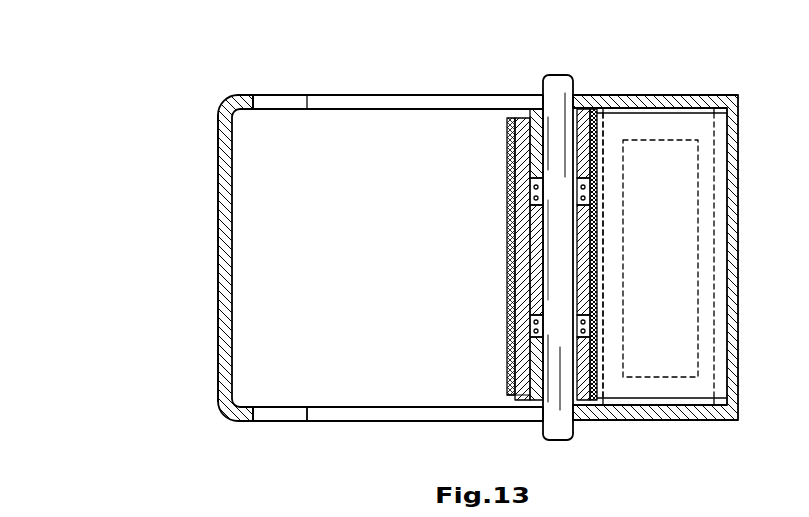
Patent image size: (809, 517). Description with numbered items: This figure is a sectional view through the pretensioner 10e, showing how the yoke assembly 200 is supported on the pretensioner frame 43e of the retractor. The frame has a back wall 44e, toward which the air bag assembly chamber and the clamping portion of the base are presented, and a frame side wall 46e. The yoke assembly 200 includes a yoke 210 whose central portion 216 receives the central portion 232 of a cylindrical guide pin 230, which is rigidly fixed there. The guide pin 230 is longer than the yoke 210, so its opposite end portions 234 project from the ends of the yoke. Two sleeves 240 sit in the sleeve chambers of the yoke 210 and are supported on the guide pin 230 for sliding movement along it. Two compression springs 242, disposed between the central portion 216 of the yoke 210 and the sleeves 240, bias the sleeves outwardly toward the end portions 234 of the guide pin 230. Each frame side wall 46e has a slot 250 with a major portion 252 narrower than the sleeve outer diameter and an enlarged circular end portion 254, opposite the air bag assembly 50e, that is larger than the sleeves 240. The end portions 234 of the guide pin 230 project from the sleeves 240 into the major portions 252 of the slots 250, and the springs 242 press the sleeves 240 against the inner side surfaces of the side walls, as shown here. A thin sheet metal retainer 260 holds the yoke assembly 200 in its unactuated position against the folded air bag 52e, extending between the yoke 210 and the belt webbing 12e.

The pretensioner 10e is at (205, 423).
The pretensioner frame 43e is at (214, 229).
The back wall 44e is at (218, 311).
The frame side wall 46e is at (351, 95).
The air bag assembly 50e is at (670, 397).
The folded air bag 52e is at (600, 215).
The belt webbing 12e is at (508, 215).
The yoke assembly 200 is at (422, 352).
The yoke 210 is at (602, 248).
The central portion of the yoke 216 is at (600, 280).
The guide pin 230 is at (528, 247).
The central portion of the guide pin 232 is at (555, 274).
The end portions of the guide pin 234 is at (557, 75).
The sleeves 240 is at (508, 143).
The compression springs 242 is at (508, 183).
The slot 250 is at (396, 424).
The major portion of the slot 252 is at (343, 413).
The enlarged circular end portion of the slot 254 is at (282, 413).
The retainer 260 is at (508, 405).